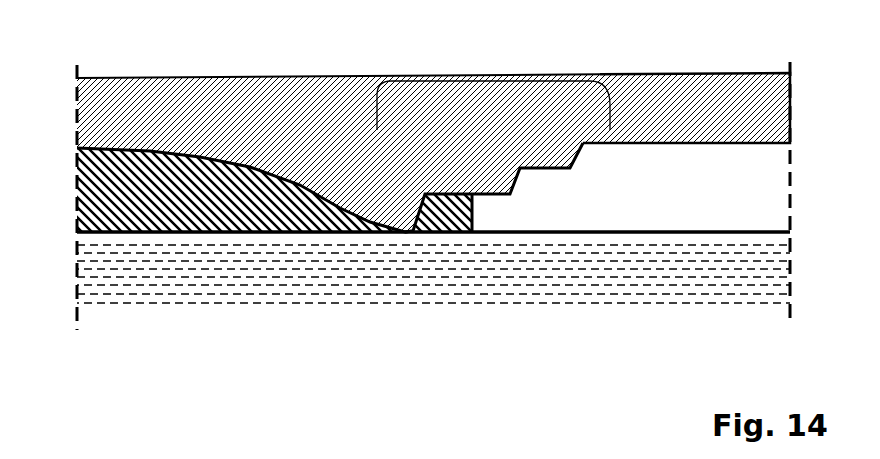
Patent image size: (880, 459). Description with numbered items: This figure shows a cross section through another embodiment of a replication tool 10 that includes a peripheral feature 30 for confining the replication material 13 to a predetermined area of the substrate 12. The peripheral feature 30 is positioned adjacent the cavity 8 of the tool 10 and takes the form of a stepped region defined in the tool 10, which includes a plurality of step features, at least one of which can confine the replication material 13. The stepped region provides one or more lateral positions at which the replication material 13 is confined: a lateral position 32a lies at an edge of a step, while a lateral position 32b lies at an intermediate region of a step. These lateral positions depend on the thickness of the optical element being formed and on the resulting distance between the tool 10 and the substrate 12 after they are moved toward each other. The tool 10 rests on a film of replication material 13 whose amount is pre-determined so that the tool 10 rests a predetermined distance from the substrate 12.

The cavity 8 is at (112, 131).
The tool 10 is at (733, 100).
The substrate 12 is at (143, 288).
The replication material 13 is at (93, 201).
The peripheral feature 30 is at (500, 77).
The lateral position at an edge of a step 32a is at (408, 230).
The lateral position at an intermediate region of a step 32b is at (629, 143).